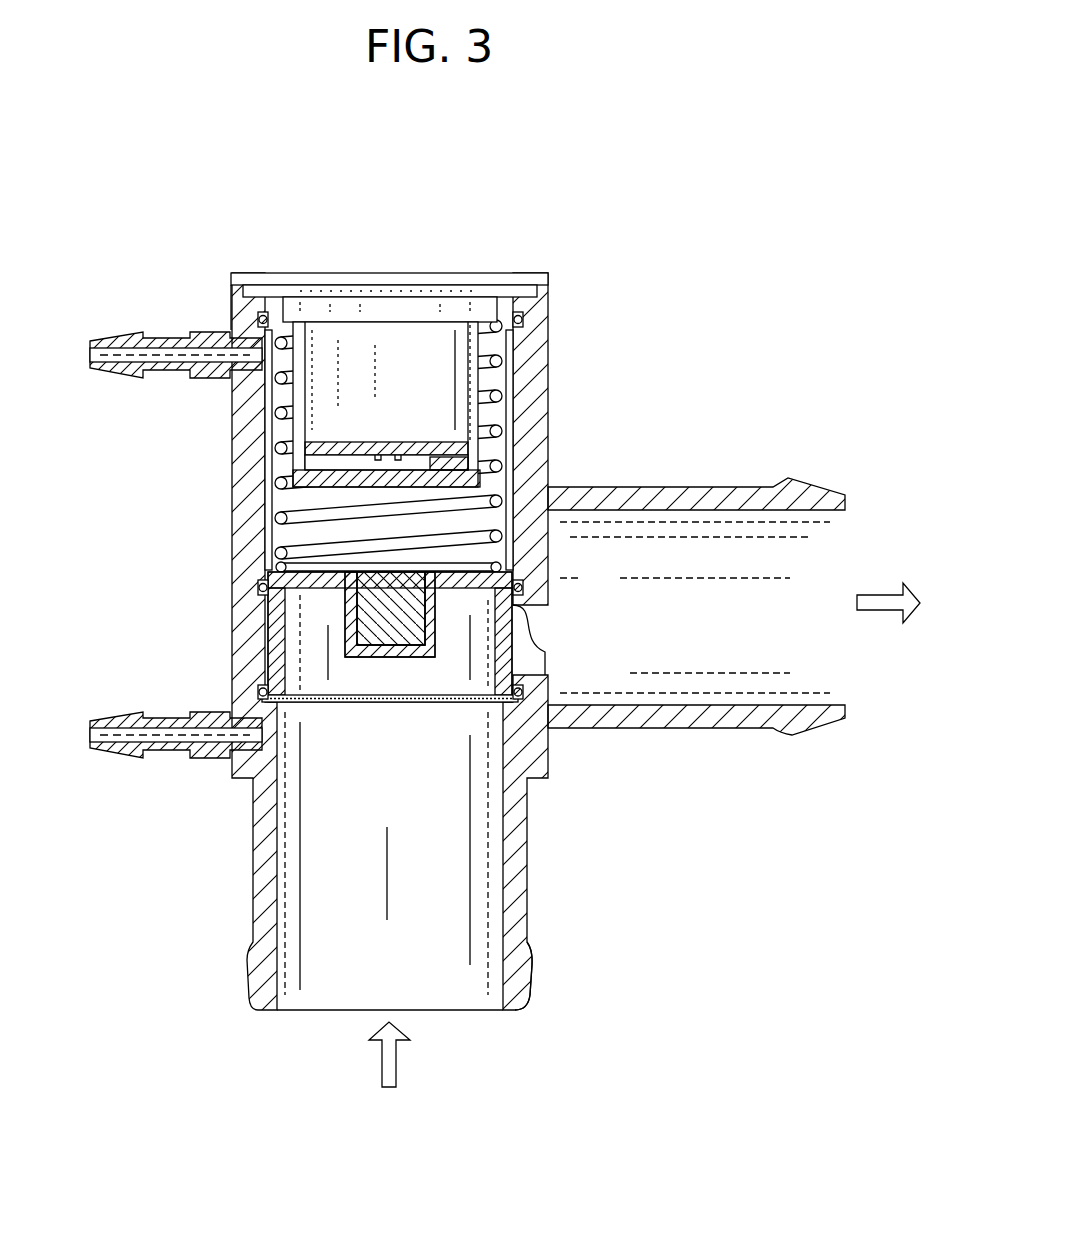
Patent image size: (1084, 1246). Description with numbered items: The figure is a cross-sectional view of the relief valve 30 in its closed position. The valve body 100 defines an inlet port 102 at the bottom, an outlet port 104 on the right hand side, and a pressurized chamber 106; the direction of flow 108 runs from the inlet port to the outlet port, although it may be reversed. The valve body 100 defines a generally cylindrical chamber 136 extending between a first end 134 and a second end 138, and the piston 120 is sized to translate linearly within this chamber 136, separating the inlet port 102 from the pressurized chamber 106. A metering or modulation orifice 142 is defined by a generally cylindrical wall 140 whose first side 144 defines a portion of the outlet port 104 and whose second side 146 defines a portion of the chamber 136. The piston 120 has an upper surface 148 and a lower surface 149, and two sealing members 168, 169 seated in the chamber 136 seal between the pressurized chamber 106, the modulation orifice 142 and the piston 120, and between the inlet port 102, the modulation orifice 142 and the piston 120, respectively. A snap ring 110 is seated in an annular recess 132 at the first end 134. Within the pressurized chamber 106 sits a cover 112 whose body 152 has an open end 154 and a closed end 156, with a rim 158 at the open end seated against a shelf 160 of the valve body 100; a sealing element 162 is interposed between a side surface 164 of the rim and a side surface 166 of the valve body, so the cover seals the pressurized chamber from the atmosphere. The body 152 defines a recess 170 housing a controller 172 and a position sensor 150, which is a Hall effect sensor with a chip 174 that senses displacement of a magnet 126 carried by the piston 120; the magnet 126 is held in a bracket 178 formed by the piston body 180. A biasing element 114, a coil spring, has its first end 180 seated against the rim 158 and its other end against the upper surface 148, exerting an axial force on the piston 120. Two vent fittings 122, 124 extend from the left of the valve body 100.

The relief valve 30 is at (703, 312).
The valve body 100 is at (584, 487).
The inlet port 102 is at (528, 862).
The outlet port 104 is at (750, 487).
The pressurized chamber 106 is at (350, 548).
The direction of flow 108 is at (399, 1056).
The snap ring 110 is at (532, 278).
The cover 112 is at (438, 305).
The biasing element 114 is at (530, 410).
The piston 120 is at (306, 662).
The vent fitting 122 is at (170, 758).
The vent fitting 124 is at (156, 337).
The magnet 126 is at (292, 612).
The annular recess 132 is at (540, 301).
The first end 134 is at (549, 283).
The cylindrical chamber 136 is at (282, 862).
The second end 138 is at (531, 942).
The cylindrical wall 140 is at (552, 578).
The modulation orifice 142 is at (536, 617).
The first side 144 is at (548, 598).
The second side 146 is at (694, 487).
The upper surface 148 is at (451, 580).
The lower surface 149 is at (434, 704).
The position sensor 150 is at (517, 440).
The body 152 is at (562, 527).
The open end 154 is at (500, 292).
The closed end 156 is at (322, 486).
The rim 158 is at (523, 318).
The shelf 160 is at (522, 344).
The sealing element 162 is at (261, 318).
The side surface 164 is at (248, 282).
The side surface 166 is at (270, 382).
The sealing member 168 is at (259, 589).
The sealing member 169 is at (292, 730).
The recess 170 is at (411, 350).
The controller 172 is at (305, 463).
The Hall effect position sensor 174 is at (538, 384).
The bracket 178 is at (360, 704).
The piston body 180 is at (464, 683).